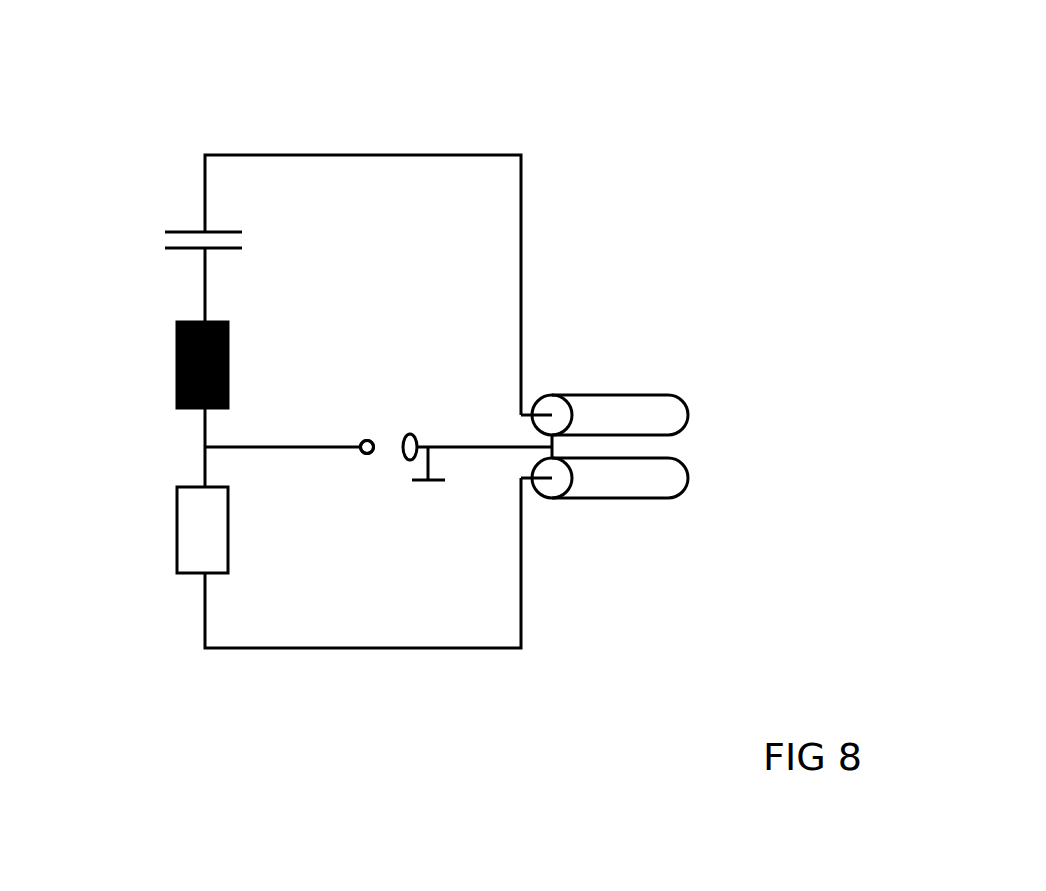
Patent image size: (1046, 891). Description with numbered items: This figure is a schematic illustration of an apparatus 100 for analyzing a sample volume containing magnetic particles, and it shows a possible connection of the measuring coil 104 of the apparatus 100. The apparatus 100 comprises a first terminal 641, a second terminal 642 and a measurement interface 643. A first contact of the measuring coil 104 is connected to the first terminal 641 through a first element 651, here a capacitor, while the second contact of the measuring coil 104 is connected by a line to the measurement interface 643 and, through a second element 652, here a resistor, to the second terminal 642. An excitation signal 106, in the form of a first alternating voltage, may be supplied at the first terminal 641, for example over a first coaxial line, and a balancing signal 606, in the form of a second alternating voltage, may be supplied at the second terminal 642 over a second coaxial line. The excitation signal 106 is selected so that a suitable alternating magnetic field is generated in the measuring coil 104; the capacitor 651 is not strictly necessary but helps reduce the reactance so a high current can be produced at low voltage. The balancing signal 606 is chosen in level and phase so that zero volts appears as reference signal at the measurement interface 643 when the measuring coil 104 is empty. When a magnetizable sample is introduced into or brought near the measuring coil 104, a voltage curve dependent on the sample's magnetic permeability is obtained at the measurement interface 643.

The apparatus 100 is at (145, 126).
The first element 651 is at (182, 250).
The measuring coil 104 is at (180, 373).
The second element 652 is at (180, 537).
The measurement interface 643 is at (362, 452).
The first terminal 641 is at (540, 412).
The second terminal 642 is at (540, 486).
The excitation signal 106 is at (787, 410).
The balancing signal 606 is at (782, 482).